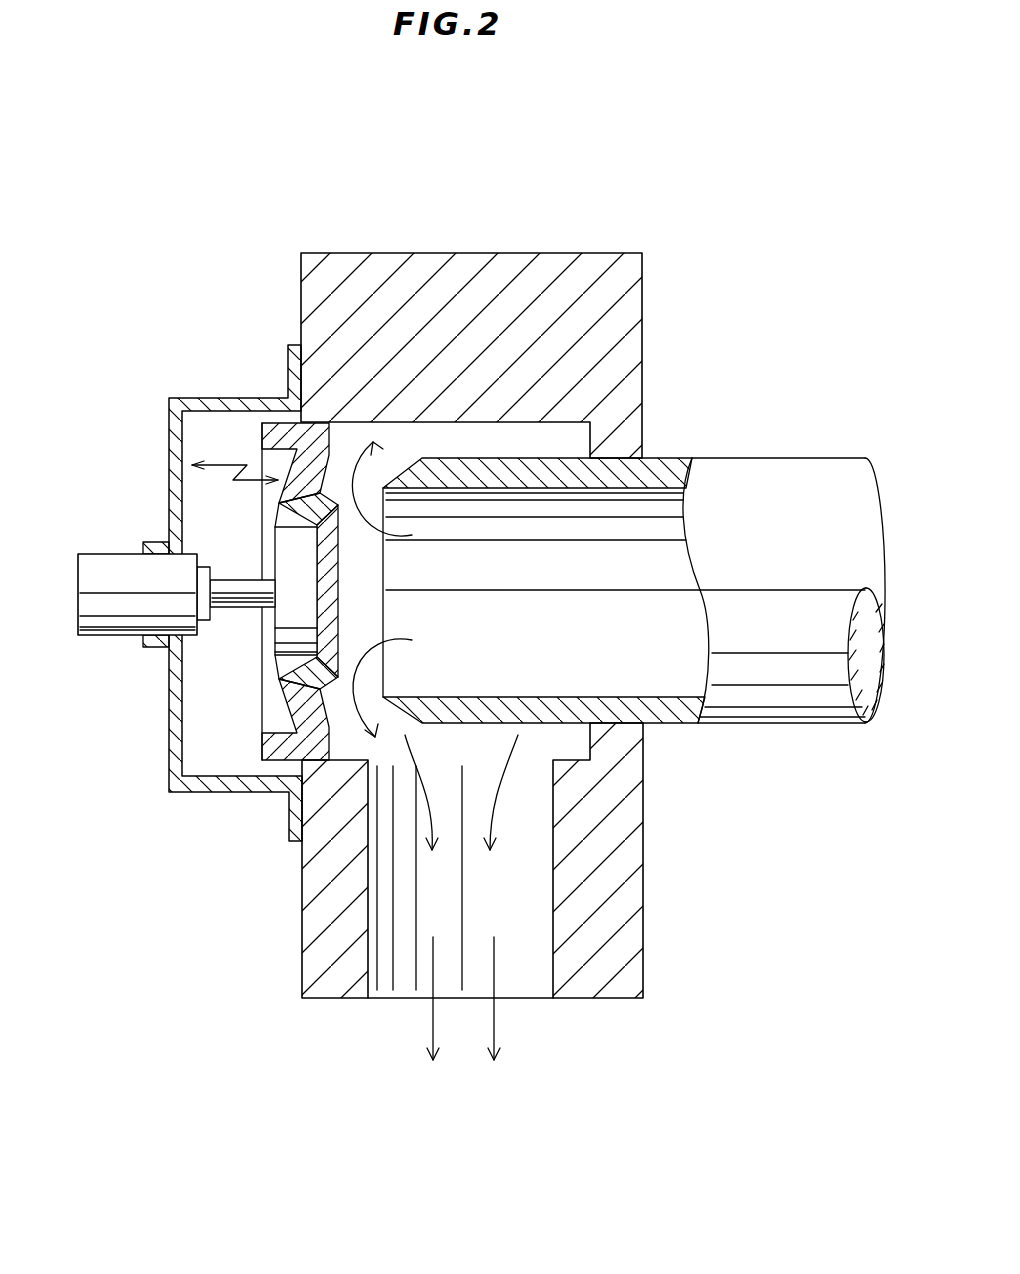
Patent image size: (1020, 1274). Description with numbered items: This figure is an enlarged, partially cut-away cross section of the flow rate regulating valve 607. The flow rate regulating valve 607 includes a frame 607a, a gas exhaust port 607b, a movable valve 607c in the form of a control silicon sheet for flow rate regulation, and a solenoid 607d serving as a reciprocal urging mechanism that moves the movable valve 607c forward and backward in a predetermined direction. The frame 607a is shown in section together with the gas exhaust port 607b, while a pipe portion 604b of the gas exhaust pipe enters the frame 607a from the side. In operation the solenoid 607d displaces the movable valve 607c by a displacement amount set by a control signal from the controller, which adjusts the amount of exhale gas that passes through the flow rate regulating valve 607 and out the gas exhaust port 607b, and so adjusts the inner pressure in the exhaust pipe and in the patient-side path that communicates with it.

The flow rate regulating valve 607 is at (132, 382).
The frame 607a is at (632, 328).
The gas exhaust port 607b is at (553, 947).
The movable valve 607c is at (295, 690).
The solenoid 607d is at (95, 637).
The pipe 604b is at (765, 723).